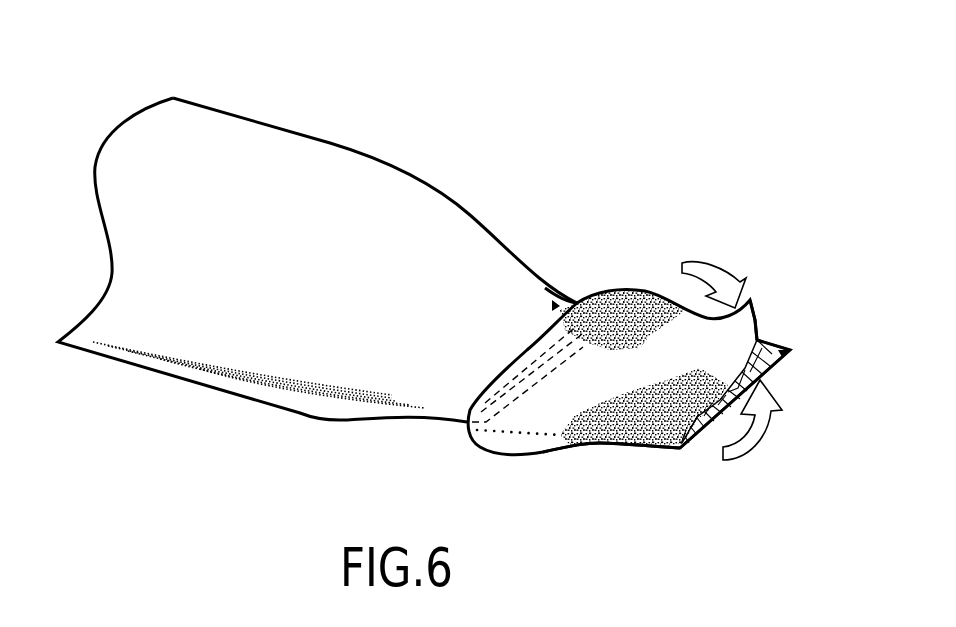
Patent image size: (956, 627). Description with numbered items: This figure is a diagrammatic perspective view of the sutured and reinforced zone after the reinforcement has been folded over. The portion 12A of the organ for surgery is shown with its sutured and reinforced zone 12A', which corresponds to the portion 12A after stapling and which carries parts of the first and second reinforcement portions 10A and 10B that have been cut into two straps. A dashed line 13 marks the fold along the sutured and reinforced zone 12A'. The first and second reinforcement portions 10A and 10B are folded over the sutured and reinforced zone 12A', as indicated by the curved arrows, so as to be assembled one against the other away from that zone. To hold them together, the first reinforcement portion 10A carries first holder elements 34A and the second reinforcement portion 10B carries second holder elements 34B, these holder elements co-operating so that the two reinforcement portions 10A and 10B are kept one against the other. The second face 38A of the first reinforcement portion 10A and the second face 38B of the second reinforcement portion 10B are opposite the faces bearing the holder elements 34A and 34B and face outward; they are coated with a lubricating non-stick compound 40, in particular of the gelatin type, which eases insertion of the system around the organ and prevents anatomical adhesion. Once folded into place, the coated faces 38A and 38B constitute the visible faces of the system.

The portion of the organ 12A is at (317, 242).
The sutured and reinforced zone 12A' is at (549, 256).
The fold lines 13 is at (523, 368).
The second face of the first reinforcement portion 38A is at (645, 338).
The first reinforcement portion 10A is at (740, 330).
The first holder elements 34A is at (760, 320).
The second holder elements 34B is at (786, 362).
The second reinforcement portion 10B is at (683, 384).
The lubricating non-stick compound 40 is at (627, 444).
The second face of the second reinforcement portion 38B is at (695, 434).